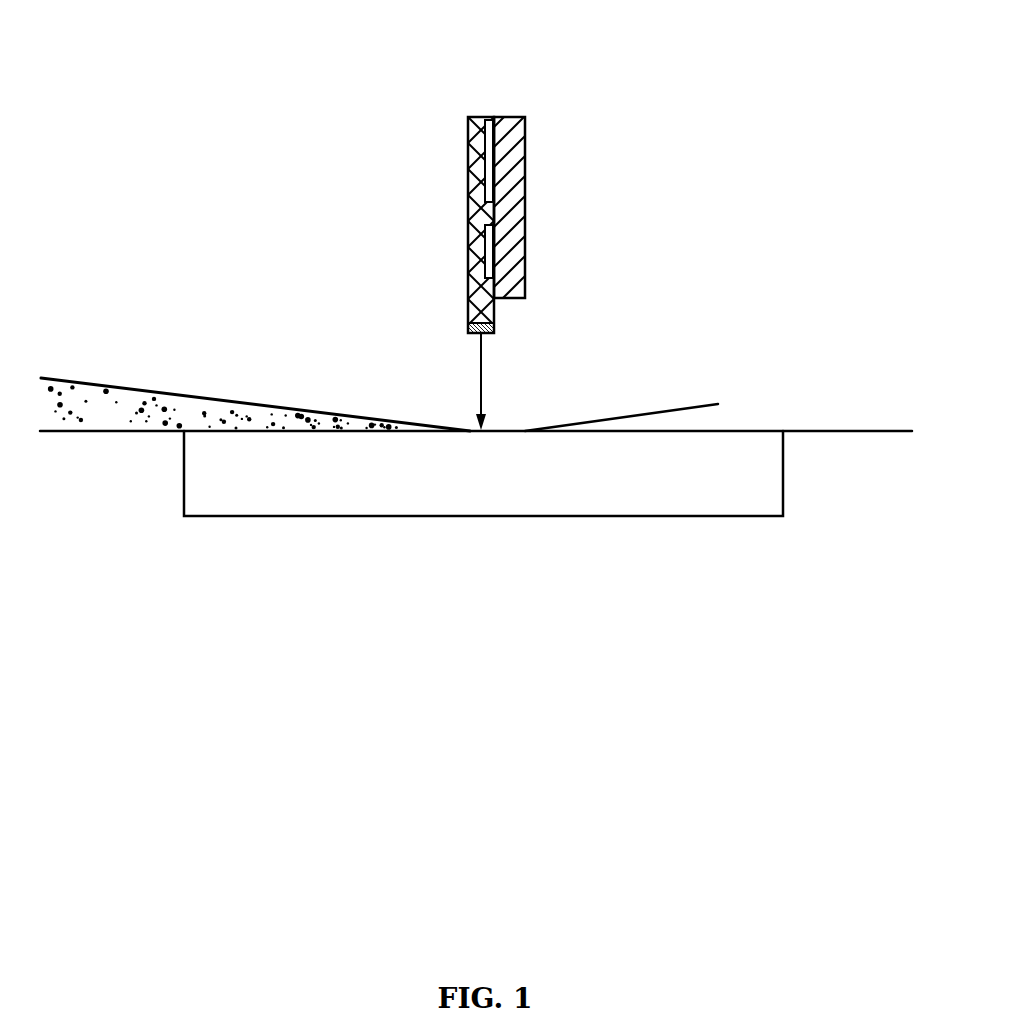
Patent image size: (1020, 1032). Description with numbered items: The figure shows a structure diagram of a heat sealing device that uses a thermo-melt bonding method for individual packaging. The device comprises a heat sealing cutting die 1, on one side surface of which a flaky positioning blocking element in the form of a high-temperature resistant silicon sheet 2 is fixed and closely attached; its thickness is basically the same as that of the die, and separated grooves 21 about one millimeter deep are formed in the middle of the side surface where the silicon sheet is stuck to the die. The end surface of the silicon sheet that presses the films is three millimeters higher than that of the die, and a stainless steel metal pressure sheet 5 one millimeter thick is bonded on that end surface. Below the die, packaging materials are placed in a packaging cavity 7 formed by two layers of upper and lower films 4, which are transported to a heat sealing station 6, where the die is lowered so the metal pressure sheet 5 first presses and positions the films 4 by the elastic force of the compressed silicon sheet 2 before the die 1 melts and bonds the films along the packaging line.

The heat sealing cutting die 1 is at (518, 168).
The high-temperature resistant silicon sheet 2 is at (469, 162).
The grooves 21 is at (484, 127).
The metal pressure sheet 5 is at (493, 327).
The films 4 is at (135, 388).
The packaging cavity 7 is at (223, 410).
The heat sealing station 6 is at (280, 490).